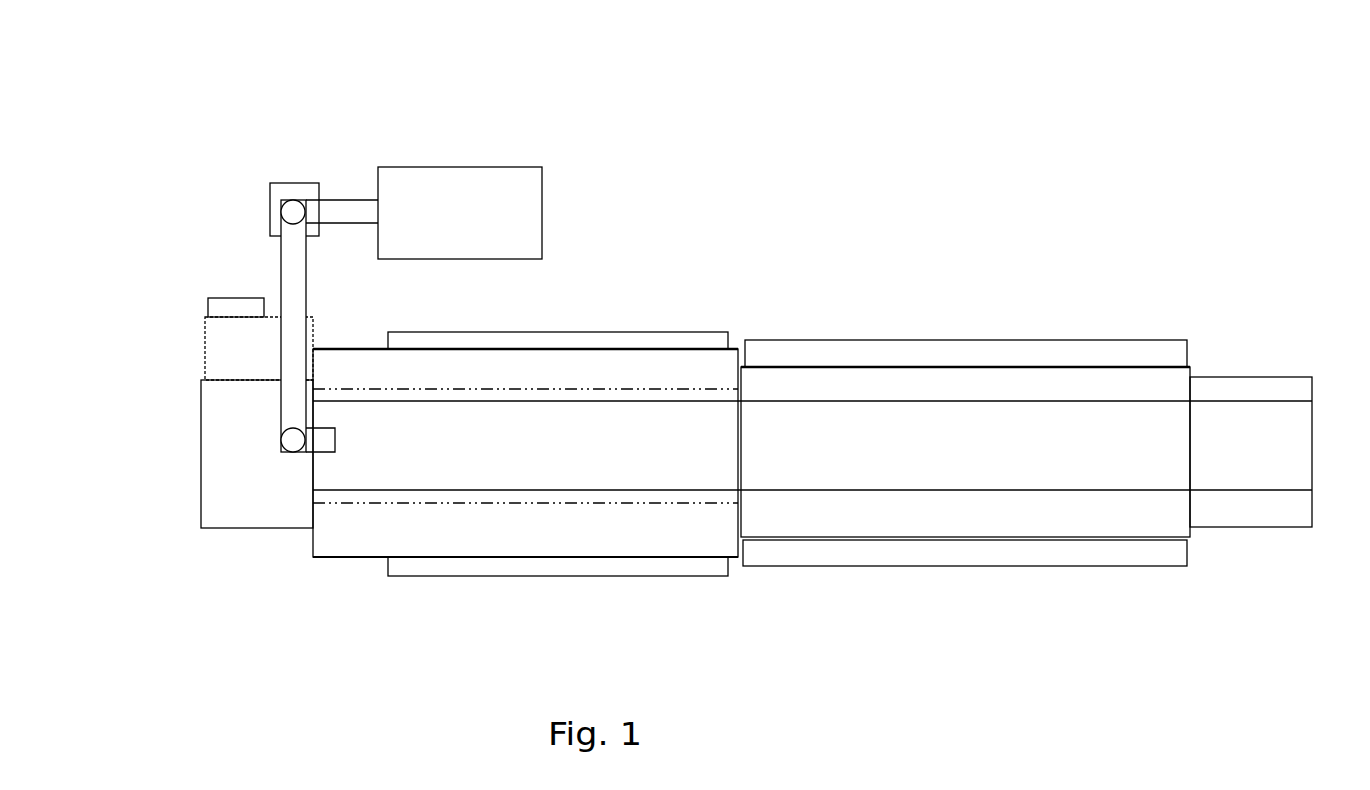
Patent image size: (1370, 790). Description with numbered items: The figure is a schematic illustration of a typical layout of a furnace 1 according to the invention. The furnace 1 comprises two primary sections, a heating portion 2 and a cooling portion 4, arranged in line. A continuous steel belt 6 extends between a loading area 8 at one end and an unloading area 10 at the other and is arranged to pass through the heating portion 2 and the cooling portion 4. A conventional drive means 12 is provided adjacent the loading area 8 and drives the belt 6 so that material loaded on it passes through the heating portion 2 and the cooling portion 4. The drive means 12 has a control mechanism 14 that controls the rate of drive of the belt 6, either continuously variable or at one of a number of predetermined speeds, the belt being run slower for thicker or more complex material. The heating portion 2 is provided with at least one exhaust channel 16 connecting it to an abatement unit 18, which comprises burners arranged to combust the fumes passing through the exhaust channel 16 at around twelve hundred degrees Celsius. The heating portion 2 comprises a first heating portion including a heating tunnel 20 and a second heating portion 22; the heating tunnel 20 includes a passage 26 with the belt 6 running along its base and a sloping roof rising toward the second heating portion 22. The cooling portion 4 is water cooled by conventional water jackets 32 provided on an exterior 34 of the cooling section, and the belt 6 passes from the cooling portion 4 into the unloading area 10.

The furnace 1 is at (782, 182).
The heating portion 2 is at (571, 587).
The cooling portion 4 is at (861, 579).
The steel belt 6 is at (365, 502).
The loading area 8 is at (199, 501).
The unloading area 10 is at (1270, 542).
The drive means 12 is at (193, 351).
The control mechanism 14 is at (227, 286).
The exhaust channel 16 is at (269, 256).
The abatement unit 18 is at (399, 155).
The heating tunnel 20 is at (403, 569).
The second heating portion 22 is at (639, 515).
The passage 26 is at (620, 376).
The water jackets 32 is at (999, 326).
The exterior 34 is at (851, 355).